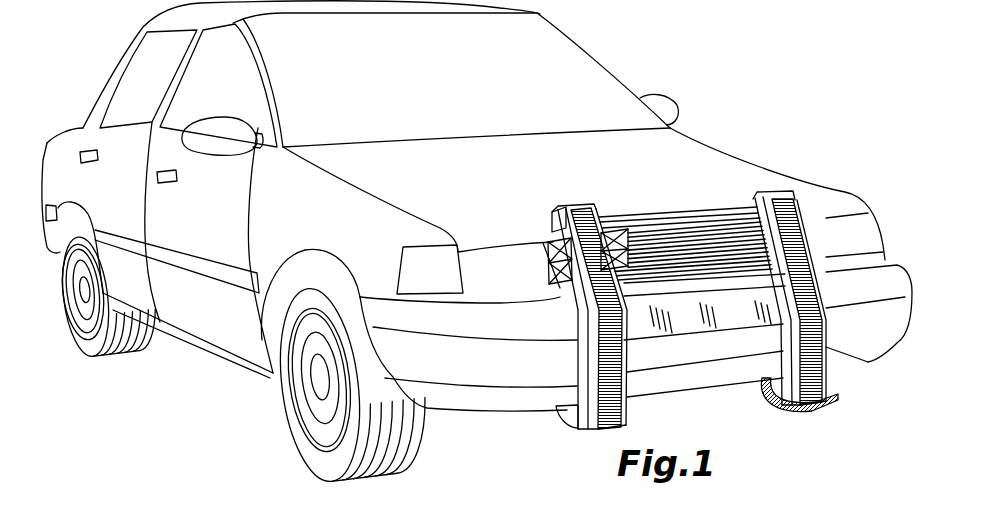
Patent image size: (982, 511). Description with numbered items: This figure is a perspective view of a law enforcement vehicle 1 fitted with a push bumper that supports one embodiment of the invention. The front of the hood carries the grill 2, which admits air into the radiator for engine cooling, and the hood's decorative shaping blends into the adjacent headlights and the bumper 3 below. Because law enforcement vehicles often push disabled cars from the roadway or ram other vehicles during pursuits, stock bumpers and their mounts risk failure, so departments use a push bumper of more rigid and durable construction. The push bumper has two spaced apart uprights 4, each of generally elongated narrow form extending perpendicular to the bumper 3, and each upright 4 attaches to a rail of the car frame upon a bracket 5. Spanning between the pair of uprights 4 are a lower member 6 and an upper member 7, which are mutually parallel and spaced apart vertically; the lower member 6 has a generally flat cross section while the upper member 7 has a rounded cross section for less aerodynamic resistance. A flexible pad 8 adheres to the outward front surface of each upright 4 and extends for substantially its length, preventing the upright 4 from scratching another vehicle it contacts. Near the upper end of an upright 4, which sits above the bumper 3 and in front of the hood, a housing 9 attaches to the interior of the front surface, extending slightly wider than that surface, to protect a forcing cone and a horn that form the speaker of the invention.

The law enforcement vehicle 1 is at (463, 243).
The grill 2 is at (693, 250).
The bumper 3 is at (492, 377).
The upright 4 is at (557, 229).
The bracket 5 is at (567, 415).
The lower member 6 is at (693, 323).
The upper member 7 is at (667, 216).
The flexible pad 8 is at (575, 208).
The housing 9 is at (557, 268).